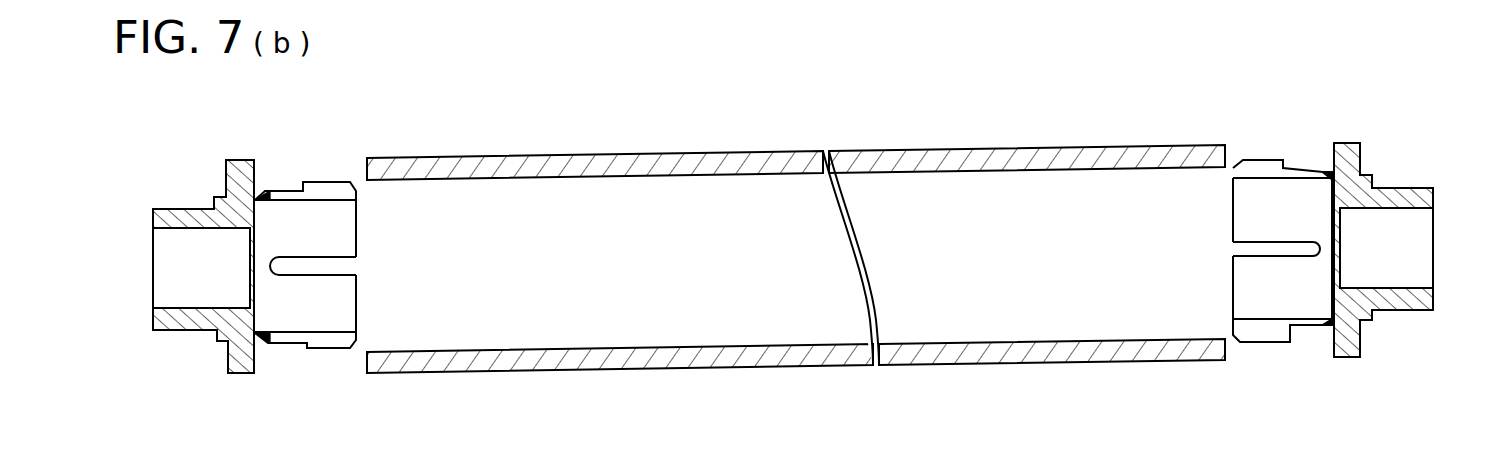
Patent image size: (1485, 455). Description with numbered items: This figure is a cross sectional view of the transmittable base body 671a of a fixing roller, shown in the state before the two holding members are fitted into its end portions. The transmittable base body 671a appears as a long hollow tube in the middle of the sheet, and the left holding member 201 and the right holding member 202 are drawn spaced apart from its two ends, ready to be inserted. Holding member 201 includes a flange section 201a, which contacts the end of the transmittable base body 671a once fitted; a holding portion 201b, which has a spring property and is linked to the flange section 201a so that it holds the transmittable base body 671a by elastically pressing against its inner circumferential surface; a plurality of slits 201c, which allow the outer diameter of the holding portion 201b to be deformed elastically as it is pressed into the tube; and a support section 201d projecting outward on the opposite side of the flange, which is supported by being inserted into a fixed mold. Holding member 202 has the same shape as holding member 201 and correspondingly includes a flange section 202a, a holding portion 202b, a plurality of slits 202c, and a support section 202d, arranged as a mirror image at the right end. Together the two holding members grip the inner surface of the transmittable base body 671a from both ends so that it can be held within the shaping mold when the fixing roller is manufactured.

The holding member 201 is at (266, 170).
The flange section 201a is at (247, 373).
The holding portion 201b is at (328, 350).
The slits 201c is at (302, 276).
The support section 201d is at (183, 330).
The holding member 202 is at (1367, 158).
The flange section 202a is at (1347, 357).
The holding portion 202b is at (1258, 343).
The slits 202c is at (1282, 260).
The support section 202d is at (1400, 310).
The transmittable base body 671a is at (778, 387).